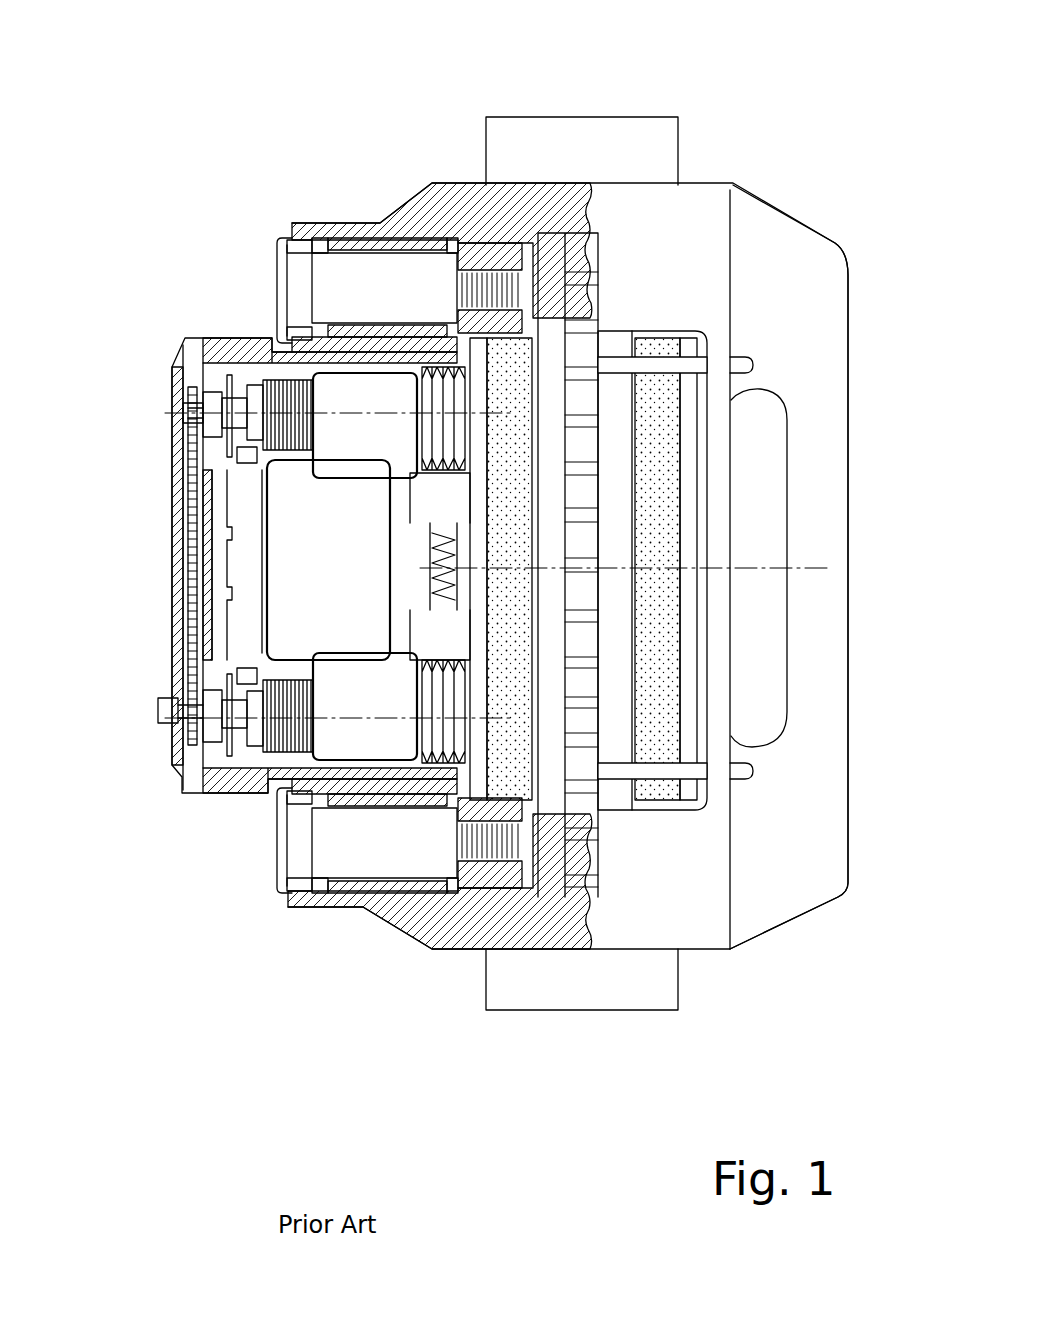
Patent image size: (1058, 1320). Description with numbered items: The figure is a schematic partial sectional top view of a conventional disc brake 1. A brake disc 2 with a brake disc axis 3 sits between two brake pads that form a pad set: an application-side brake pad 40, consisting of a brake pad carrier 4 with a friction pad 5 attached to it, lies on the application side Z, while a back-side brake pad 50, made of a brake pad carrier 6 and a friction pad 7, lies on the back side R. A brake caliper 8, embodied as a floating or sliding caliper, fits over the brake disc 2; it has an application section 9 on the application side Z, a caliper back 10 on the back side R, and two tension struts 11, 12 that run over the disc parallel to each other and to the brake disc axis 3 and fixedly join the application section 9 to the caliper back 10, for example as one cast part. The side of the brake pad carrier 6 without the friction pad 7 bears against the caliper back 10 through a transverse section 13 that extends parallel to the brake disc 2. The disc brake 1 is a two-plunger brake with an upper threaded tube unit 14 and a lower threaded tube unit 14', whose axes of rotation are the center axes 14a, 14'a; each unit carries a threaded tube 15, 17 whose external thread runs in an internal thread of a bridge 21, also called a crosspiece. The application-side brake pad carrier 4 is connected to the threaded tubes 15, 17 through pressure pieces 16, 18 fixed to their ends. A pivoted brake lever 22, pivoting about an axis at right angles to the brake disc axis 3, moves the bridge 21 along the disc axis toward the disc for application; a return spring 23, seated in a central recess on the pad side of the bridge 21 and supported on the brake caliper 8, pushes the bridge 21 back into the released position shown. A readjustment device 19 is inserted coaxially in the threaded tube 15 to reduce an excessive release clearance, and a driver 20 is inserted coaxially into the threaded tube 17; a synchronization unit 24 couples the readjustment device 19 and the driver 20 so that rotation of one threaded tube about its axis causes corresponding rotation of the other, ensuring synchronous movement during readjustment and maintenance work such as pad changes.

The disc brake 1 is at (412, 105).
The brake disc 2 is at (553, 257).
The brake disc axis 3 is at (757, 572).
The brake pad carrier 4 is at (478, 235).
The friction pad 5 is at (517, 345).
The brake pad carrier 6 is at (685, 340).
The friction pad 7 is at (652, 338).
The brake caliper 8 is at (632, 178).
The application section 9 is at (427, 927).
The caliper back 10 is at (753, 910).
The tension strut 11 is at (610, 215).
The tension strut 12 is at (618, 923).
The transverse section 13 is at (715, 435).
The threaded tube unit 14 is at (133, 414).
The center axis 14a is at (153, 410).
The threaded tube unit 14' is at (132, 713).
The center axis 14'a is at (155, 758).
The threaded tube 15 is at (277, 377).
The pressure piece 16 is at (497, 388).
The threaded tube 17 is at (283, 738).
The pressure piece 18 is at (460, 743).
The readjustment device 19 is at (240, 382).
The driver 20 is at (230, 740).
The bridge 21 is at (400, 618).
The pivoted brake lever 22 is at (317, 552).
The return spring 23 is at (427, 570).
The synchronization unit 24 is at (185, 330).
The application-side brake pad 40 is at (498, 412).
The back-side brake pad 50 is at (661, 413).
The application side Z is at (353, 1000).
The back side R is at (722, 1000).